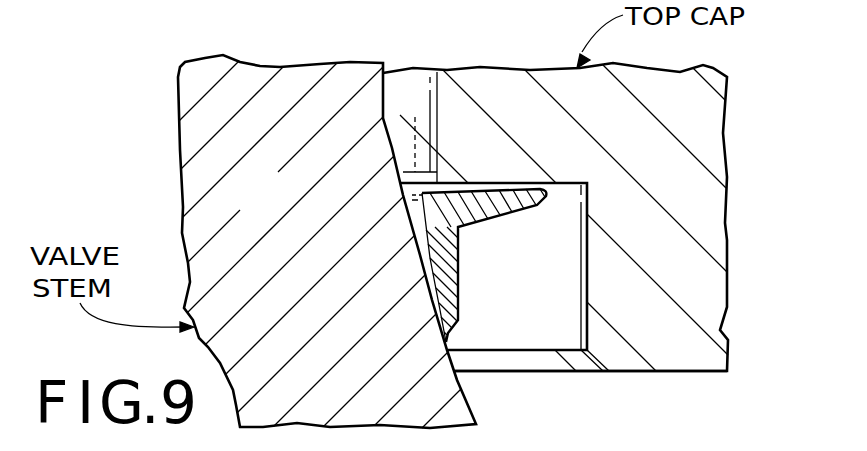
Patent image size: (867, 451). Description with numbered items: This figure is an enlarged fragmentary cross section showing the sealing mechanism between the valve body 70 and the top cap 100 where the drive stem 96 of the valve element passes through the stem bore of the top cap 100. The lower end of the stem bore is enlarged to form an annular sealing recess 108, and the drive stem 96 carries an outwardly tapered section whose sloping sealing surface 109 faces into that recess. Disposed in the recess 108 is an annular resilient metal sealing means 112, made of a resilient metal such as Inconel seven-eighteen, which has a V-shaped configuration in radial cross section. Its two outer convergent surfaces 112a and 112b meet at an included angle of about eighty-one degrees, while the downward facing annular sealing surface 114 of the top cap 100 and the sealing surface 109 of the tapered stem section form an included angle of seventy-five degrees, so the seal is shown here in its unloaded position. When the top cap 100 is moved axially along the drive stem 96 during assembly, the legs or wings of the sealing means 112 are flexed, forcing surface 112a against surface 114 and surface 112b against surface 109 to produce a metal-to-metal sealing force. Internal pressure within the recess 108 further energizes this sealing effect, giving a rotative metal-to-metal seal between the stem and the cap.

The valve body 70 is at (283, 6).
The drive stem 96 is at (242, 123).
The top cap member 100 is at (680, 162).
The annular sealing recess 108 is at (522, 312).
The sealing surface of the tapered section 109 is at (450, 353).
The annular resilient metal sealing means 112 is at (447, 207).
The outer convergent surface 112a is at (466, 176).
The outer convergent surface 112b is at (408, 228).
The downward facing annular sealing surface 114 is at (565, 187).